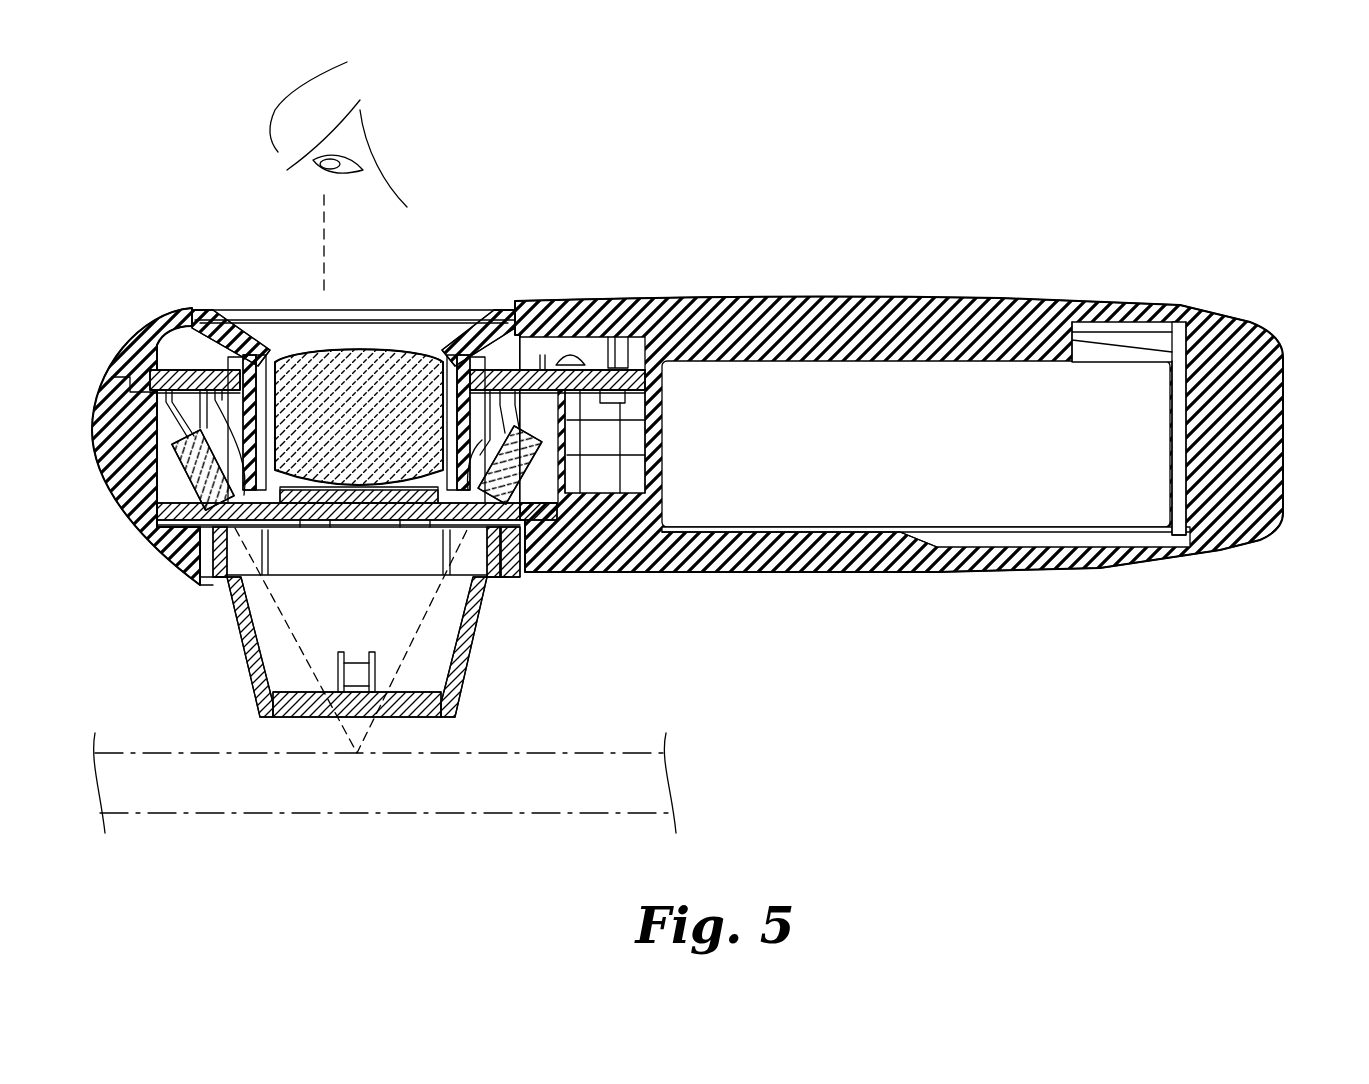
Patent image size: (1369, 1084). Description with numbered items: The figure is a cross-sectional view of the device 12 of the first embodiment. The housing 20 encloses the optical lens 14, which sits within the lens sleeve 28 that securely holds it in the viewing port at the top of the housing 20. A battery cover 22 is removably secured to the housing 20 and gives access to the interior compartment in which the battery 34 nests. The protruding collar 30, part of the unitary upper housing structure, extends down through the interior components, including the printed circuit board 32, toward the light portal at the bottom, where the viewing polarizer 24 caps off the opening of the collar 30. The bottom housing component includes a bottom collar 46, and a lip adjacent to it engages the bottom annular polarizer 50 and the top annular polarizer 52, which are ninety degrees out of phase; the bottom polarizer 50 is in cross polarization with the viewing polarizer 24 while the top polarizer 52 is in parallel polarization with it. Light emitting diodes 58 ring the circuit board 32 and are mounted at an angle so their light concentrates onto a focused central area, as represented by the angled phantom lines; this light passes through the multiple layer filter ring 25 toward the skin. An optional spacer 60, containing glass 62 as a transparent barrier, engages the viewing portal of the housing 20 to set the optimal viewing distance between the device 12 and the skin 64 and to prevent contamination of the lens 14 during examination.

The device 12 is at (723, 442).
The lens 14 is at (376, 348).
The housing 20 is at (723, 442).
The battery cover 22 is at (1285, 443).
The viewing polarizer 24 is at (330, 522).
The multiple layer filter ring 25 is at (172, 540).
The lens sleeve 28 is at (470, 322).
The protruding collar 30 is at (515, 572).
The printed circuit board 32 is at (600, 372).
The battery 34 is at (1125, 518).
The bottom collar 46 is at (607, 533).
The bottom annular polarizer 50 is at (215, 537).
The top annular polarizer 52 is at (527, 572).
The light emitting diodes 58 is at (183, 478).
The spacer 60 is at (360, 637).
The glass 62 is at (418, 718).
The skin 64 is at (584, 756).